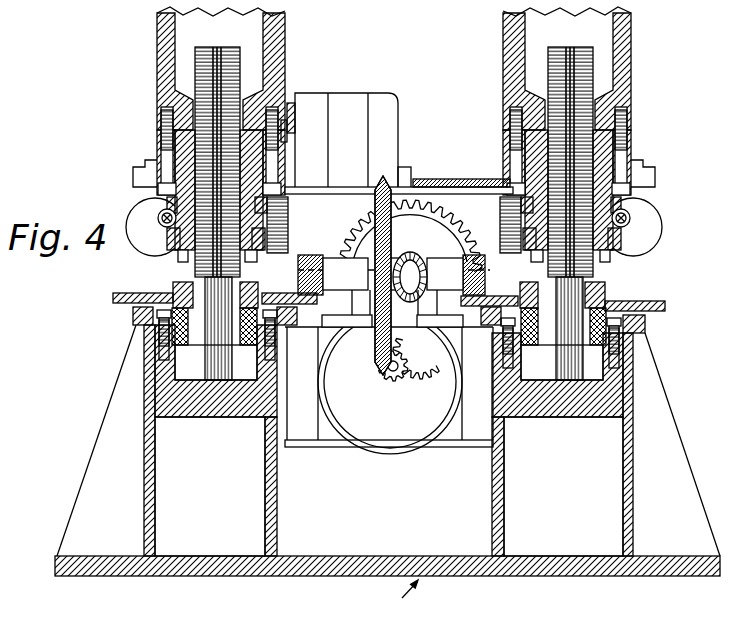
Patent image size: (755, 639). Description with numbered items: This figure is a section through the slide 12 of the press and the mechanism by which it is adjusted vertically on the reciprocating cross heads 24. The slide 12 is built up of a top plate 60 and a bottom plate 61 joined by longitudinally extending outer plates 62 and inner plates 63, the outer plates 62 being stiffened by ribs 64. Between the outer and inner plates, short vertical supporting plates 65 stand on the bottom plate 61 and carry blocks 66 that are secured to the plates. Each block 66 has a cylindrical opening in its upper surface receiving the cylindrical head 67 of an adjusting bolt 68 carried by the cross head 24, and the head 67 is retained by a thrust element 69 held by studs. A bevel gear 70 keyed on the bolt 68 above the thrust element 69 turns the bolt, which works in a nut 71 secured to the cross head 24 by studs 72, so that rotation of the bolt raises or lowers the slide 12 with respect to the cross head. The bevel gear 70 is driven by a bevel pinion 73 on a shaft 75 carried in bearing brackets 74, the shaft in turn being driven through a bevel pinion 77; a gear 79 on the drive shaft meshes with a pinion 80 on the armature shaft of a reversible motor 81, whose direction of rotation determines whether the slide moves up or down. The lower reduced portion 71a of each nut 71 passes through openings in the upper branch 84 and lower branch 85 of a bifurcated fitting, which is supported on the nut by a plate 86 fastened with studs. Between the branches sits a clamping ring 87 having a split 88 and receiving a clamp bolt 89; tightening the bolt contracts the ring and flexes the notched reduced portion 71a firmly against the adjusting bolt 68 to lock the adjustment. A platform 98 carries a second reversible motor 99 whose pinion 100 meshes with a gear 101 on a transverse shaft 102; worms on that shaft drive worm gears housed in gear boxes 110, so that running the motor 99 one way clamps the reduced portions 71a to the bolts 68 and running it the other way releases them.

The slide 12 is at (402, 598).
The cross head 24 is at (286, 30).
The top plate 60 is at (133, 312).
The bottom plate 61 is at (340, 565).
The outer plate 62 is at (145, 468).
The inner plate 63 is at (288, 490).
The rib 64 is at (115, 407).
The vertical supporting plate 65 is at (265, 503).
The block 66 is at (219, 406).
The cylindrical head 67 is at (185, 368).
The adjusting bolt 68 is at (227, 50).
The thrust element 69 is at (233, 330).
The bevel gear 70 is at (118, 294).
The nut 71 is at (157, 150).
The reduced portion 71a is at (158, 200).
The stud 72 is at (288, 147).
The bevel pinion 73 is at (313, 256).
The bearing bracket 74 is at (337, 305).
The shaft 75 is at (403, 270).
The bevel pinion 77 is at (420, 262).
The gear 79 is at (426, 356).
The pinion 80 is at (401, 377).
The reversible motor 81 is at (390, 424).
The upper branch 84 is at (268, 205).
The lower branch 85 is at (173, 247).
The plate 86 is at (258, 253).
The clamping ring 87 is at (289, 228).
The split 88 is at (628, 217).
The clamp bolt 89 is at (164, 222).
The platform 98 is at (344, 188).
The reversible motor 99 is at (390, 95).
The pinion 100 is at (300, 130).
The gear 101 is at (293, 103).
The transverse shaft 102 is at (435, 182).
The gear box 110 is at (135, 212).